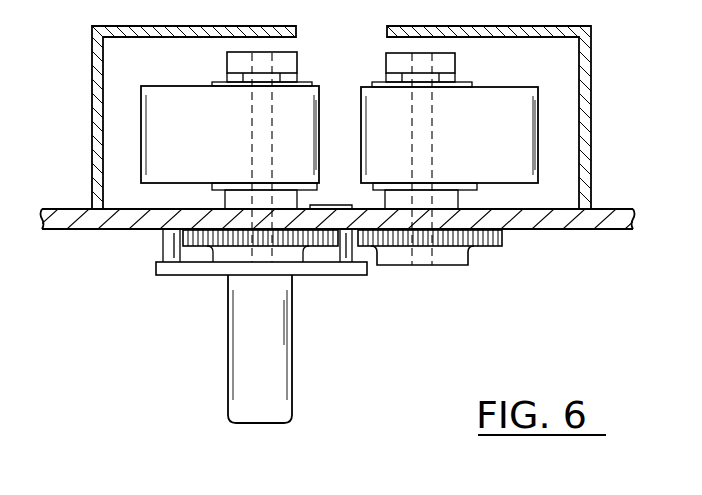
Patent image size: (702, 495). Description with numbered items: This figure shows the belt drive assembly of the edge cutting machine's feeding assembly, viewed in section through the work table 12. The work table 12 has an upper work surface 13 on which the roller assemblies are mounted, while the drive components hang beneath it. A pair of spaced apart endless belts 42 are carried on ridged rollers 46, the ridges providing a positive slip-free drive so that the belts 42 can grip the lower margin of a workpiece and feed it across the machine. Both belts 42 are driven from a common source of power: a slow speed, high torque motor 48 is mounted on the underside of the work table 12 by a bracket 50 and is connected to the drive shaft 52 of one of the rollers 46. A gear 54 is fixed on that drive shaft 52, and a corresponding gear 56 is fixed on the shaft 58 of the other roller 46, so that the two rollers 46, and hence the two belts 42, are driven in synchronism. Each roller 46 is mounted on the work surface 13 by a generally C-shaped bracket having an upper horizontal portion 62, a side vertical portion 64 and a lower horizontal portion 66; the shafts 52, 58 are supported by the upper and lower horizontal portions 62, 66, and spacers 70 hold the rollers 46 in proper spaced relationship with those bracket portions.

The work table 12 is at (578, 231).
The work surface 13 is at (68, 209).
The endless belts 42 is at (216, 143).
The rollers 46 is at (228, 81).
The motor 48 is at (291, 357).
The bracket 50 is at (325, 273).
The drive shaft 52 is at (250, 203).
The gear 54 is at (197, 246).
The gear 56 is at (483, 250).
The shaft 58 is at (432, 202).
The upper horizontal portion 62 is at (400, 53).
The side vertical portion 64 is at (383, 80).
The lower horizontal portion 66 is at (383, 204).
The spacers 70 is at (254, 200).